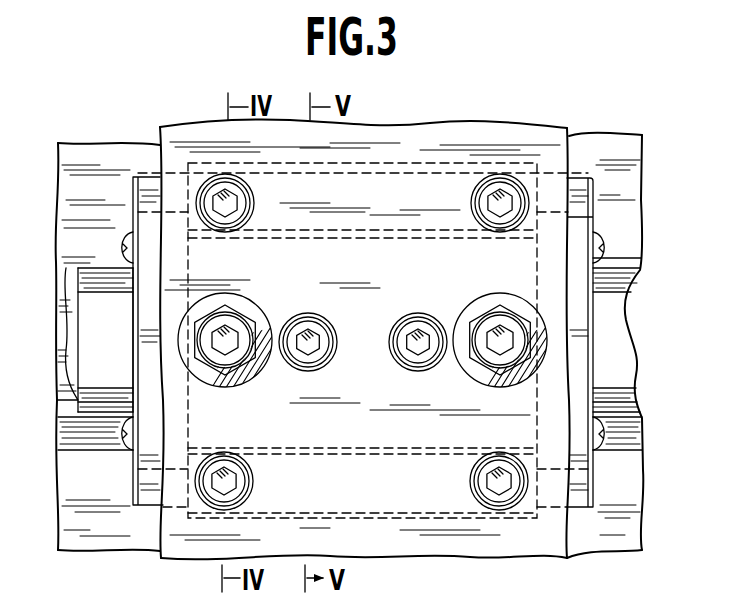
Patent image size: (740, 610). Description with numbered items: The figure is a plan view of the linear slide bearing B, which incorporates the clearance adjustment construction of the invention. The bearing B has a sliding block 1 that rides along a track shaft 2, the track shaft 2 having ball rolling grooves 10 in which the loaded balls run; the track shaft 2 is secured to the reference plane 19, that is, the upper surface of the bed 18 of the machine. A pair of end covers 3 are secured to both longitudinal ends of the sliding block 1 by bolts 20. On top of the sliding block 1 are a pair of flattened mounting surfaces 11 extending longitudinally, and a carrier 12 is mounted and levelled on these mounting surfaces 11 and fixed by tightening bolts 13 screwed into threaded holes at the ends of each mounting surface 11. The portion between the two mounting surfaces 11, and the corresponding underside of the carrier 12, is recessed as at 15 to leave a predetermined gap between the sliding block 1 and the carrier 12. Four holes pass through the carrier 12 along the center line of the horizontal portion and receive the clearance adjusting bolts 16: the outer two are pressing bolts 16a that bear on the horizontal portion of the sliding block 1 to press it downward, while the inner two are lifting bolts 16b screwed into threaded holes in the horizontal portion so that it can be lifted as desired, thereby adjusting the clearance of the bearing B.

The sliding block 1 is at (408, 158).
The track shaft 2 is at (350, 328).
The end covers 3 is at (128, 196).
The ball rolling grooves 10 is at (78, 280).
The mounting surfaces 11 is at (372, 167).
The carrier 12 is at (188, 122).
The tightening bolts 13 is at (210, 176).
The recess 15 is at (295, 240).
The clearance adjusting bolts 16 is at (376, 353).
The pressing bolts 16a is at (236, 372).
The lifting bolts 16b is at (323, 326).
The bed 18 is at (92, 140).
The reference plane 19 is at (63, 350).
The bolts 20 is at (122, 247).
The linear slide bearing B is at (147, 170).